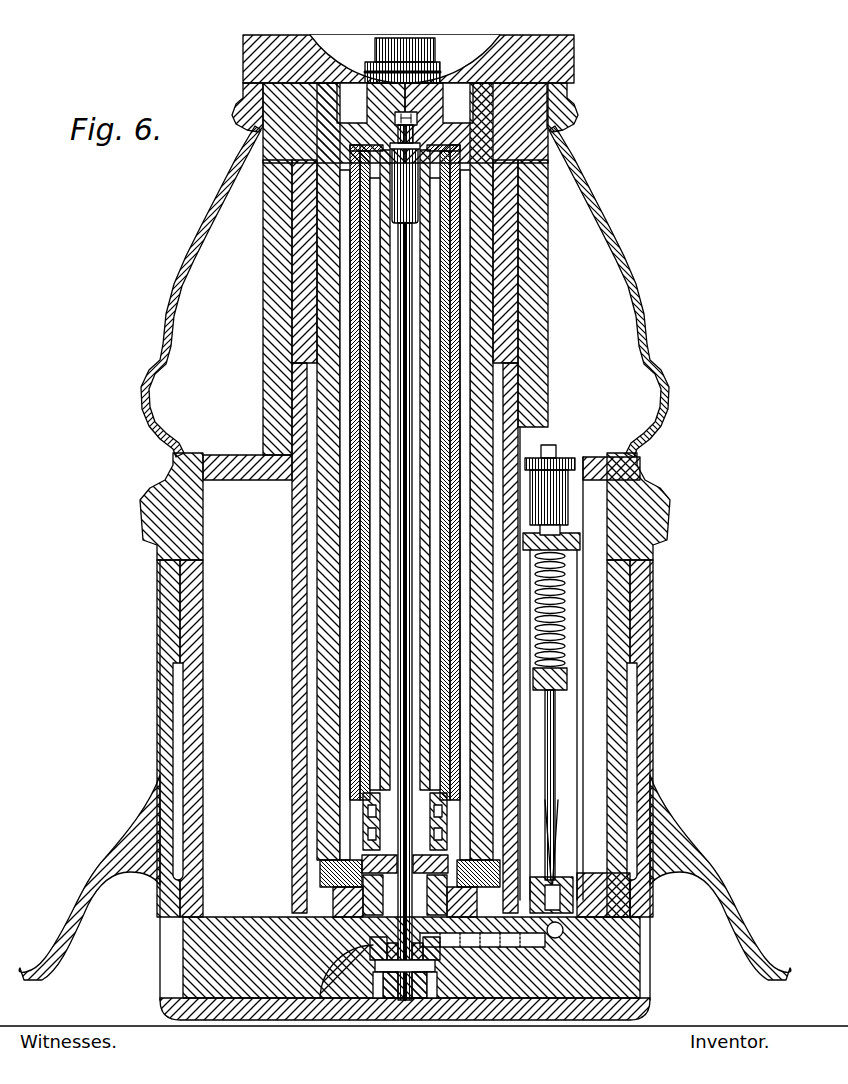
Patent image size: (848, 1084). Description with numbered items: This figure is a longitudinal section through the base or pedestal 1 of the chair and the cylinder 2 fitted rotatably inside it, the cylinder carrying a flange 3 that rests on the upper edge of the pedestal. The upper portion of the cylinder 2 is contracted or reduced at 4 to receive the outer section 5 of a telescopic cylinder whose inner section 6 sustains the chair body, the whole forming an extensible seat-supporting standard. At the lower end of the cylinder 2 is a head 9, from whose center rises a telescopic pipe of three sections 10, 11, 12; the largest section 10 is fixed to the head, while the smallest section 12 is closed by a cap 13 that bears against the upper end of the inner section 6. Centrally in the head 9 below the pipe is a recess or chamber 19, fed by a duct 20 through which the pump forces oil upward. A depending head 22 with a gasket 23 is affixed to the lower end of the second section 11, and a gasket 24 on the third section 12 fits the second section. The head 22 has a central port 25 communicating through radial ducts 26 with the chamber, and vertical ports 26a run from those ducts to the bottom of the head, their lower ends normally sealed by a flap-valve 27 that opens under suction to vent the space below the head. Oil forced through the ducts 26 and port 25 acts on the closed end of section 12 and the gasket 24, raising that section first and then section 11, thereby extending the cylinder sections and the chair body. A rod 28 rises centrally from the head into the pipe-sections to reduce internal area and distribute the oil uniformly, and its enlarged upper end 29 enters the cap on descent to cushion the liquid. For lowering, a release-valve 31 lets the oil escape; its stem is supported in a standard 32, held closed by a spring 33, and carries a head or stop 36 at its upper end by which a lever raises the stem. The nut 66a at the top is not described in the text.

The adjusting nut 66a is at (447, 24).
The cap 13 is at (417, 133).
The enlarged upper end 29 is at (400, 210).
The contracted or reduced portion 4 is at (272, 283).
The head or stop 36 is at (563, 458).
The rod 28 is at (404, 497).
The flange 3 is at (662, 526).
The outer section of telescopic cylinder 5 is at (298, 580).
The inner section of telescopic cylinder 6 is at (326, 620).
The spring 33 is at (565, 596).
The first pipe-section 10 is at (362, 683).
The second pipe-section 11 is at (352, 722).
The third pipe-section 12 is at (386, 760).
The base or pedestal 1 is at (655, 667).
The cylinder 2 is at (618, 725).
The standard 32 is at (577, 784).
The gasket 24 is at (376, 832).
The central port 25 is at (394, 865).
The gasket 23 is at (378, 890).
The release-valve 31 is at (567, 893).
The head 9 is at (237, 980).
The radial ducts 26 is at (370, 947).
The depending head 22 is at (372, 960).
The recess or chamber 19 is at (381, 985).
The flap-valve 27 is at (376, 982).
The vertical ports 26a is at (432, 978).
The duct 20 is at (540, 940).